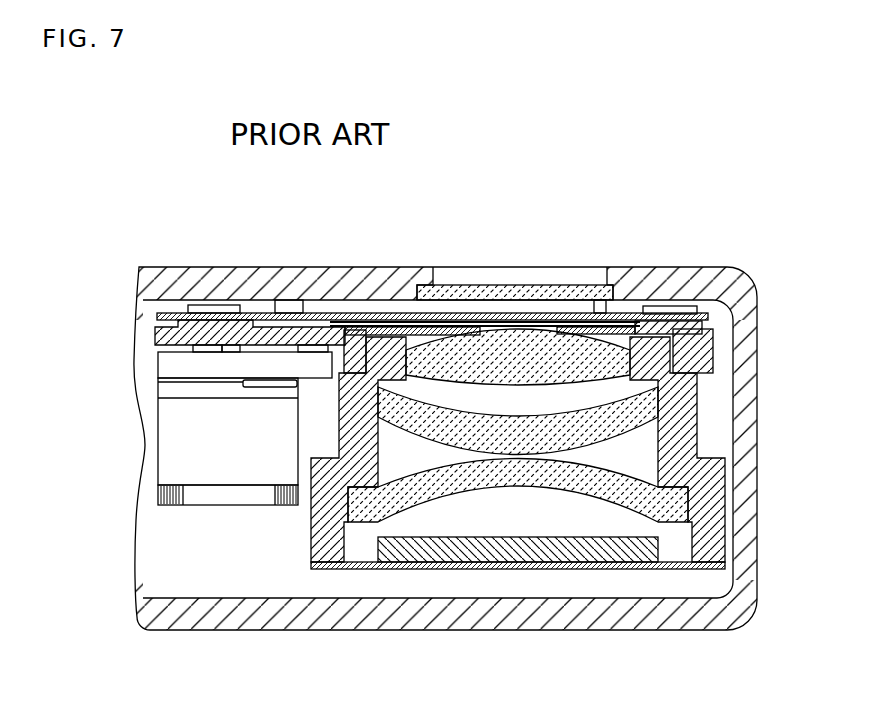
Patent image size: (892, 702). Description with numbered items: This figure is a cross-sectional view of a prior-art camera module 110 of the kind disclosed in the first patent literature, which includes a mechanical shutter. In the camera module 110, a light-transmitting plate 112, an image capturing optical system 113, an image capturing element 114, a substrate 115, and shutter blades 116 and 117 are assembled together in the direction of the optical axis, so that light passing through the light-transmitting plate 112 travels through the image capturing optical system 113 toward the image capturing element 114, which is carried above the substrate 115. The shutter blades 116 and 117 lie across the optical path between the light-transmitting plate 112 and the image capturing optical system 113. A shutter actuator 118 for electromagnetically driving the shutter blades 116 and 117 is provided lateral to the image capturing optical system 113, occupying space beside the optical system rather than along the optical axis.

The camera module 110 is at (728, 197).
The light-transmitting plate 112 is at (468, 276).
The image capturing optical system 113 is at (699, 508).
The image capturing element 114 is at (535, 537).
The substrate 115 is at (722, 566).
The shutter blade 116 is at (312, 278).
The shutter blade 117 is at (601, 300).
The shutter actuator 118 is at (165, 463).